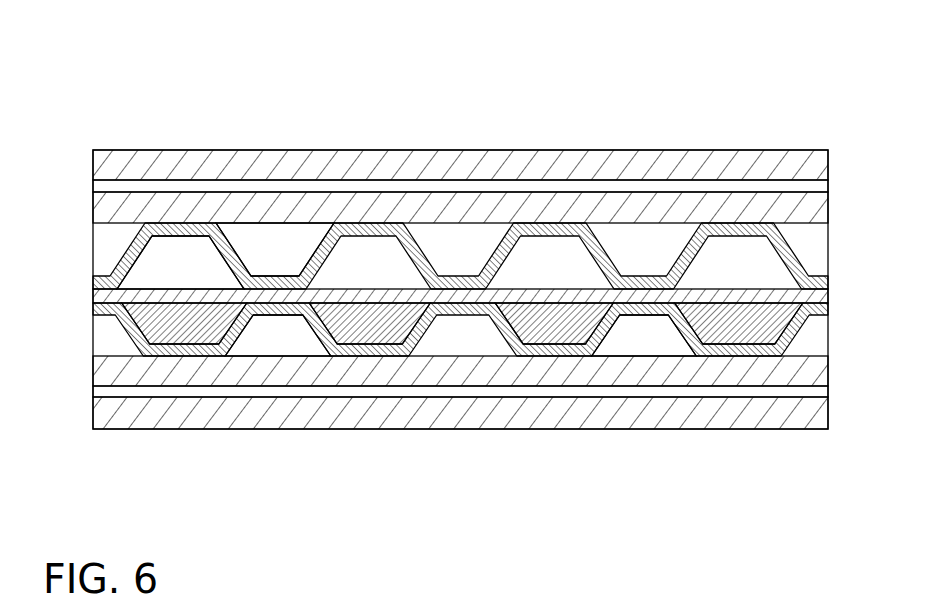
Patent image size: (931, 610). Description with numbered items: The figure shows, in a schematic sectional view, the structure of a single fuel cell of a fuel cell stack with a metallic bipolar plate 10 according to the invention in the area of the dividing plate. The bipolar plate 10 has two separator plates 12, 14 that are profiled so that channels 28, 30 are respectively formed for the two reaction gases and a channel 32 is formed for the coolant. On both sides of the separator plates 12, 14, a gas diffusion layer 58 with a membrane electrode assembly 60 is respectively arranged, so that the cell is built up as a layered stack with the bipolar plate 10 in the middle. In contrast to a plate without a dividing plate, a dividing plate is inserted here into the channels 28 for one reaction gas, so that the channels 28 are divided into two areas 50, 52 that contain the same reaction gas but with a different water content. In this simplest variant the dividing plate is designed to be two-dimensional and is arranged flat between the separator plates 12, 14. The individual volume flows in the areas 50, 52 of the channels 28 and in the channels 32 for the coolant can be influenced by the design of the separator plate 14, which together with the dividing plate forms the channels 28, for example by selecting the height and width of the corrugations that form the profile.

The bipolar plate 10 is at (536, 110).
The separator plate 12 is at (459, 283).
The separator plate 14 is at (699, 349).
The channel for a reaction gas 28 is at (275, 332).
The channel for a reaction gas 30 is at (275, 249).
The channel for the coolant 32 is at (185, 259).
The area of the channel 50 is at (634, 333).
The area of the channel 52 is at (551, 332).
The gas diffusion layer 58 is at (693, 165).
The membrane electrode assembly 60 is at (768, 184).